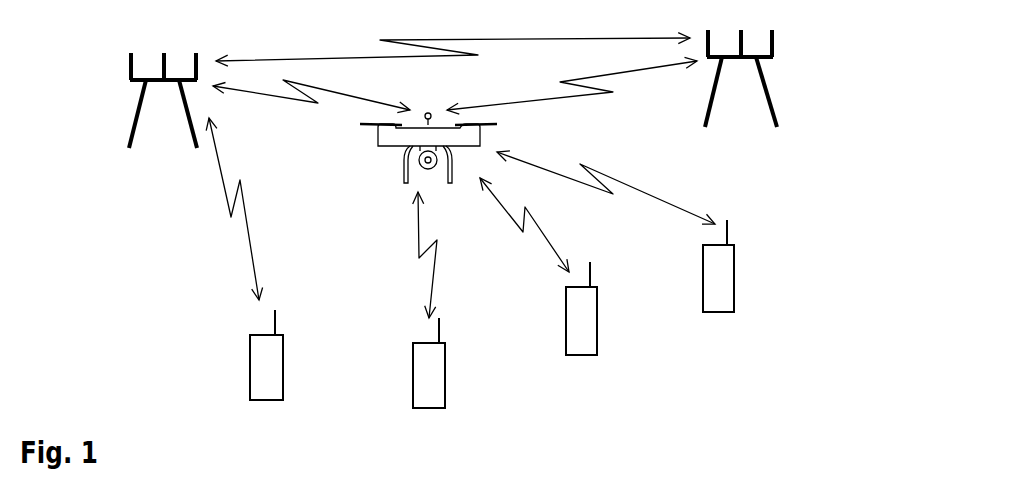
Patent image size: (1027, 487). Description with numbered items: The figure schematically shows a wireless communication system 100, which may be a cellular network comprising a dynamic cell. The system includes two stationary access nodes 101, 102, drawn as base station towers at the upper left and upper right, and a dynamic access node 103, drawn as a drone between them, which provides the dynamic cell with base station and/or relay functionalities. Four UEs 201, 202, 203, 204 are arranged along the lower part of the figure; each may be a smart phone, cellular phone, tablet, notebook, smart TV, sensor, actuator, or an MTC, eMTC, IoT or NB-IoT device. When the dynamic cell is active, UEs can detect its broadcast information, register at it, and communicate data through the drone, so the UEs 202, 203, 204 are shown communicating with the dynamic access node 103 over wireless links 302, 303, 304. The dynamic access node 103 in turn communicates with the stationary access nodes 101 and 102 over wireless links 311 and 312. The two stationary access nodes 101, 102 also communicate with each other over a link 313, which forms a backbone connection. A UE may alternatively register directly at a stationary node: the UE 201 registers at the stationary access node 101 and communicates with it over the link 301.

The wireless communication system 100 is at (130, 255).
The stationary access node 101 is at (128, 86).
The stationary access node 102 is at (770, 70).
The dynamic access node 103 is at (395, 151).
The UE 201 is at (248, 360).
The UE 202 is at (410, 375).
The UE 203 is at (562, 335).
The UE 204 is at (700, 288).
The link 301 is at (250, 250).
The link 302 is at (410, 232).
The link 303 is at (545, 239).
The link 304 is at (666, 209).
The link 311 is at (362, 101).
The link 312 is at (608, 78).
The link 313 is at (367, 55).